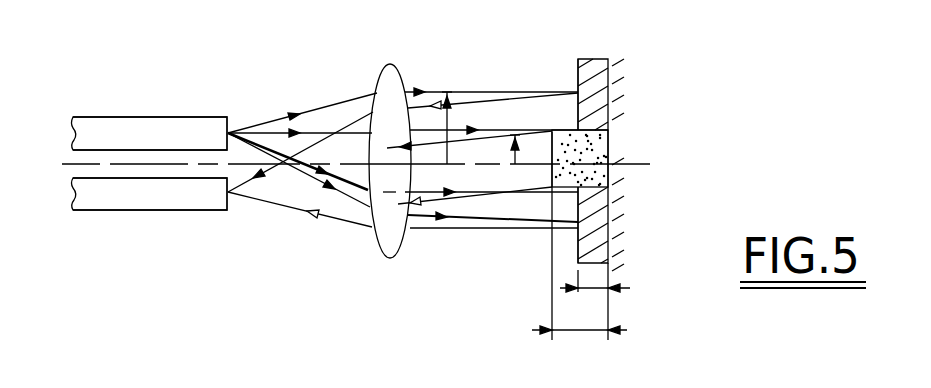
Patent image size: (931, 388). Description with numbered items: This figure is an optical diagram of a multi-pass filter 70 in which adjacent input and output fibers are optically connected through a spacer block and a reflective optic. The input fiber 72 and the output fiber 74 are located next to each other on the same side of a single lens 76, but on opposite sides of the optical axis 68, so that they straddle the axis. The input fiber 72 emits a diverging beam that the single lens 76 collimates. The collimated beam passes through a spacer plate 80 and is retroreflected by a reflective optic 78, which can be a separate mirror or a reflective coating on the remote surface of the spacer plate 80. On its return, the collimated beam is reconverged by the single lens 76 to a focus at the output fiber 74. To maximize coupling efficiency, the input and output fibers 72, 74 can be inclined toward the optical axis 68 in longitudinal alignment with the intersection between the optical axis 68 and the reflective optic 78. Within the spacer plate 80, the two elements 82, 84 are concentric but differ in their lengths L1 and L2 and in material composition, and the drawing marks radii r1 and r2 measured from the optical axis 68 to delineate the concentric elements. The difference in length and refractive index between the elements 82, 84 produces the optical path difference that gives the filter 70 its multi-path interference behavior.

The multi-pass filter 70 is at (247, 50).
The optical axis 68 is at (66, 165).
The input fiber 72 is at (170, 123).
The output fiber 74 is at (170, 204).
The single lens 76 is at (380, 256).
The reflective optic 78 is at (603, 92).
The spacer plate 80 is at (572, 64).
The element of the spacer plate 82 is at (603, 140).
The element of the spacer plate 84 is at (578, 252).
The radius r1 is at (515, 135).
The radius r2 is at (453, 110).
The length L1 is at (586, 333).
The length L2 is at (594, 290).